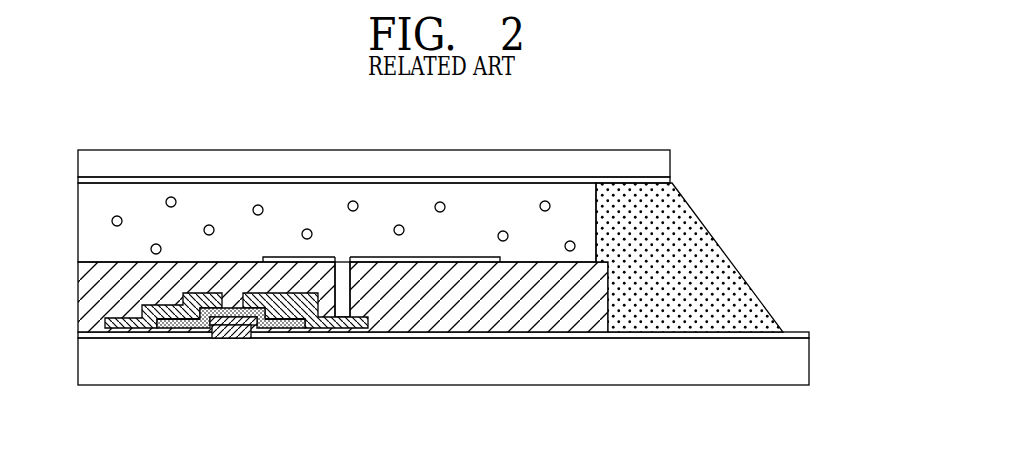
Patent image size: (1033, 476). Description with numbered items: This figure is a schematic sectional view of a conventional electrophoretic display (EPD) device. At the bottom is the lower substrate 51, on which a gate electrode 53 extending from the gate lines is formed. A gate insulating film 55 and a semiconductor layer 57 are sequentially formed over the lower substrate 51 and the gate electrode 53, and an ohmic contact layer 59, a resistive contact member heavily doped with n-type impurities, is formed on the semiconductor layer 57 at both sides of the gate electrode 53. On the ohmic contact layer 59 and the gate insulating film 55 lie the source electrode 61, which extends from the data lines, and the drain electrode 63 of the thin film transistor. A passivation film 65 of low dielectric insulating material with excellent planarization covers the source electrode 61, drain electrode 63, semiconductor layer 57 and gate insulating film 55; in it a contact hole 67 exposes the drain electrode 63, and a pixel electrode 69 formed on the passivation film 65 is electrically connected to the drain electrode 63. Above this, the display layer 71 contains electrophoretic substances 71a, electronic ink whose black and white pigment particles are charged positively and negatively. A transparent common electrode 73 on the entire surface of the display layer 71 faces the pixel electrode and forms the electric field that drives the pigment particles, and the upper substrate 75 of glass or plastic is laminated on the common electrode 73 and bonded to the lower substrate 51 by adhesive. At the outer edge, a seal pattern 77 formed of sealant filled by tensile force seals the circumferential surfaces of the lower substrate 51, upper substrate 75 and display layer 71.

The lower substrate 51 is at (800, 370).
The gate electrode 53 is at (232, 338).
The gate insulating film 55 is at (800, 333).
The semiconductor layer 57 is at (265, 328).
The ohmic contact layer 59 is at (289, 328).
The source electrode 61 is at (125, 328).
The drain electrode 63 is at (338, 328).
The passivation film 65 is at (473, 320).
The contact hole 67 is at (346, 310).
The pixel electrode 69 is at (292, 257).
The display layer 71 is at (220, 190).
The electrophoretic substances 71a is at (171, 197).
The common electrode 73 is at (497, 183).
The upper substrate 75 is at (560, 163).
The seal pattern 77 is at (723, 263).